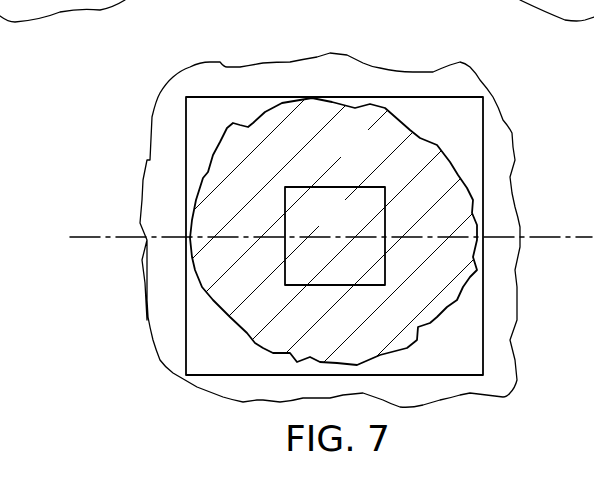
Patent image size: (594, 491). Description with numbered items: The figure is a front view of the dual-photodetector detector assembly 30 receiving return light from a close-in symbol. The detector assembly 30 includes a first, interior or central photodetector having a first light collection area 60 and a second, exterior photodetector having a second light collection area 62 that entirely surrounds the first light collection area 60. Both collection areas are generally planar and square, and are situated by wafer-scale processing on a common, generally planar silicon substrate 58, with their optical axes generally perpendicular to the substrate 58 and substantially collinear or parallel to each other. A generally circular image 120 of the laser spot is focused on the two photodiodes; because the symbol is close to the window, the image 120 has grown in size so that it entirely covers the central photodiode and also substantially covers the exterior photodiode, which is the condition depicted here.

The detector assembly 30 is at (515, 97).
The substrate 58 is at (343, 70).
The second light collection area 62 is at (476, 167).
The image of the laser spot 120 is at (418, 132).
The first light collection area 60 is at (373, 269).